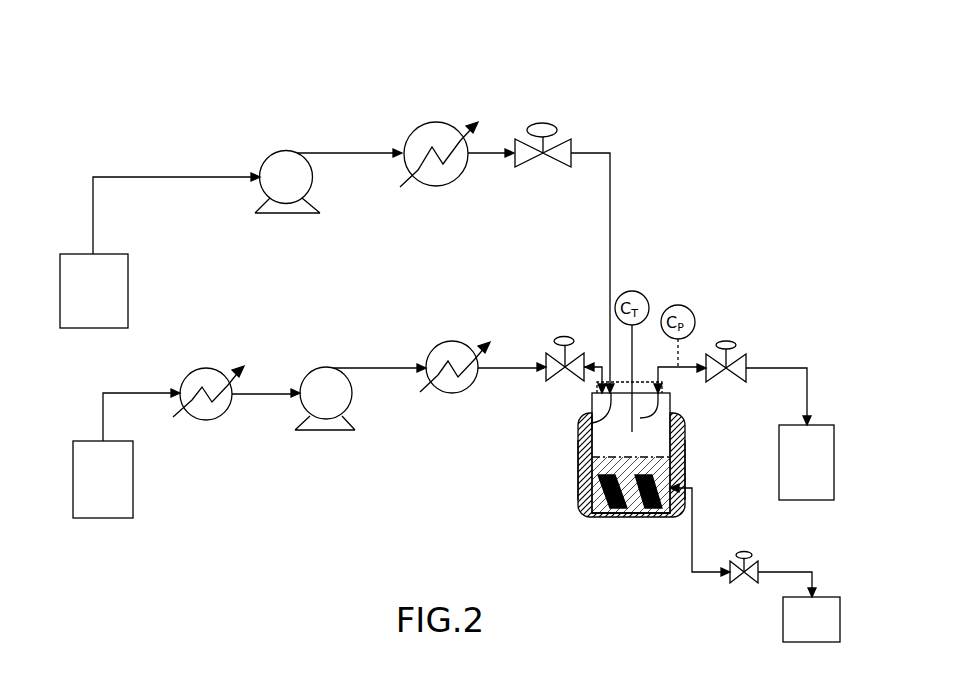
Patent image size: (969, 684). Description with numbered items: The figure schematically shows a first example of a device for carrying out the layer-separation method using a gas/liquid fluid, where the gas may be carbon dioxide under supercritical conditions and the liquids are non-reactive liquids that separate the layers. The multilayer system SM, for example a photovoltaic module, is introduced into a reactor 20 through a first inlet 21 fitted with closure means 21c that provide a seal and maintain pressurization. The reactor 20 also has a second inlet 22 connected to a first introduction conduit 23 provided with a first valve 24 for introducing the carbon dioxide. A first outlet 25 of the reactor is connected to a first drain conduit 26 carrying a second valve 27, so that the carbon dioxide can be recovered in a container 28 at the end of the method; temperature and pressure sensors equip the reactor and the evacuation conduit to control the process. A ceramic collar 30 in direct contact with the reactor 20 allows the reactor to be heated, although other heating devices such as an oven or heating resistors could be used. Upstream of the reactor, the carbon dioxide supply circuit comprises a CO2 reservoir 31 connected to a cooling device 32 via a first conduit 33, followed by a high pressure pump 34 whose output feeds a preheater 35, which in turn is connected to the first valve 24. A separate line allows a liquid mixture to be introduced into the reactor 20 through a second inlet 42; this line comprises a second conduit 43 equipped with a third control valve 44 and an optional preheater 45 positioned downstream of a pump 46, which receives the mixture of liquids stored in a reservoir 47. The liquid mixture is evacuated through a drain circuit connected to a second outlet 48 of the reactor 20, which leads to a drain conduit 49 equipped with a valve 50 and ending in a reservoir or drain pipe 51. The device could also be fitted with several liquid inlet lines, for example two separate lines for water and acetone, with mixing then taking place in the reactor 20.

The reactor 20 is at (625, 517).
The first inlet 21 is at (682, 423).
The closure means 21c is at (640, 382).
The second inlet 22 is at (588, 402).
The first introduction conduit 23 is at (510, 367).
The first valve 24 is at (562, 337).
The first outlet 25 is at (666, 402).
The first drain conduit 26 is at (693, 367).
The second valve 27 is at (737, 342).
The container 28 is at (795, 475).
The ceramic collar 30 is at (578, 471).
The CO2 reservoir 31 is at (95, 518).
The cooling device 32 is at (200, 420).
The first conduit 33 is at (143, 392).
The high pressure pump 34 is at (322, 430).
The preheater 35 is at (448, 393).
The second inlet 42 is at (593, 422).
The second conduit 43 is at (610, 213).
The third control valve 44 is at (545, 123).
The preheater 45 is at (437, 122).
The pump 46 is at (273, 150).
The reservoir 47 is at (82, 304).
The second outlet 48 is at (684, 467).
The drain conduit 49 is at (700, 572).
The valve 50 is at (742, 583).
The reservoir or drain pipe 51 is at (800, 632).
The multilayer system SM is at (650, 470).